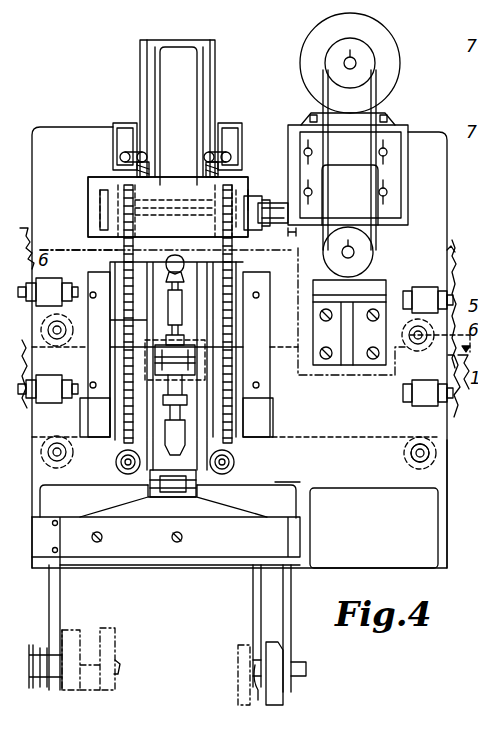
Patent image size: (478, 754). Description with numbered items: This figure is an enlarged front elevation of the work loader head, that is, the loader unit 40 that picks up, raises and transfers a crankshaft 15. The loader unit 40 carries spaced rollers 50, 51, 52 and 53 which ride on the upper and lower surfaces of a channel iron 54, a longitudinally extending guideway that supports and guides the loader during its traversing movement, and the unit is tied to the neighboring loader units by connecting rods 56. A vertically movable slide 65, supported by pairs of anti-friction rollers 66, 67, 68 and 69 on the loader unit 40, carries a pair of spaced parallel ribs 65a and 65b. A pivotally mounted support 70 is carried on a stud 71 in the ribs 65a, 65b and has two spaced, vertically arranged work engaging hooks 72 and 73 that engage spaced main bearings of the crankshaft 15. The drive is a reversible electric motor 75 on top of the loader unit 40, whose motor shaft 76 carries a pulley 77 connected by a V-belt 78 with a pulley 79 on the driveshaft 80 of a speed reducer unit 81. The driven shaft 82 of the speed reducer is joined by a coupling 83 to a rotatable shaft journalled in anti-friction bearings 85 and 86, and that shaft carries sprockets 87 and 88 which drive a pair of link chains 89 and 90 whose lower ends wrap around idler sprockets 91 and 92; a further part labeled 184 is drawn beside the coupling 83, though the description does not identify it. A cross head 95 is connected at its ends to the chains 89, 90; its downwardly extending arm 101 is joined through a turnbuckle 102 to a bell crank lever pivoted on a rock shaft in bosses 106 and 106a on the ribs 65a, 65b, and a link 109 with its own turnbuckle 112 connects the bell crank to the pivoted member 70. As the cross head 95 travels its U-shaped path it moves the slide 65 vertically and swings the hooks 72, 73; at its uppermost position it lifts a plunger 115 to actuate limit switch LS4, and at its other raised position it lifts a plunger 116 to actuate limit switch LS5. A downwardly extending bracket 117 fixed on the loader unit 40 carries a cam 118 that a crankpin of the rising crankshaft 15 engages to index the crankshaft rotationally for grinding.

The crankshaft 15 is at (230, 689).
The loader unit 40 is at (362, 488).
The roller 50 is at (78, 313).
The roller 51 is at (55, 470).
The roller 52 is at (402, 328).
The roller 53 is at (405, 460).
The channel iron 54 is at (461, 504).
The connecting rod 56 is at (446, 382).
The vertically movable slide 65 is at (207, 48).
The rib 65a is at (157, 82).
The rib 65b is at (199, 83).
The anti-friction roller 66 is at (90, 253).
The anti-friction roller 67 is at (243, 258).
The anti-friction roller 68 is at (120, 484).
The anti-friction roller 69 is at (238, 466).
The pivotally mounted support 70 is at (240, 513).
The stud 71 is at (226, 484).
The work engaging hook 72 is at (58, 604).
The work engaging hook 73 is at (290, 612).
The reversible electric motor 75 is at (381, 43).
The motor shaft 76 is at (348, 60).
The pulley 77 is at (328, 60).
The V-belt 78 is at (371, 95).
The pulley 79 is at (354, 243).
The driveshaft 80 is at (352, 252).
The speed reducer unit 81 is at (393, 280).
The driven shaft 82 is at (296, 240).
The coupling 83 is at (265, 200).
The anti-friction bearing 85 is at (88, 197).
The anti-friction bearing 86 is at (268, 224).
The sprocket 87 is at (110, 187).
The sprocket 88 is at (250, 170).
The link chain 89 is at (127, 304).
The link chain 90 is at (252, 349).
The idler sprocket 91 is at (125, 428).
The idler sprocket 92 is at (238, 428).
The cross head 95 is at (462, 256).
The downwardly extending arm 101 is at (180, 298).
The turnbuckle 102 is at (258, 300).
The projecting boss 106 is at (150, 383).
The projecting boss 106a is at (205, 375).
The link 109 is at (122, 440).
The turnbuckle 112 is at (173, 494).
The plunger 115 is at (165, 184).
The plunger 116 is at (216, 191).
The bracket 117 is at (254, 600).
The cam 118 is at (260, 700).
The coupling bracket 184 is at (250, 195).
The limit switch LS4 is at (123, 132).
The limit switch LS5 is at (232, 125).